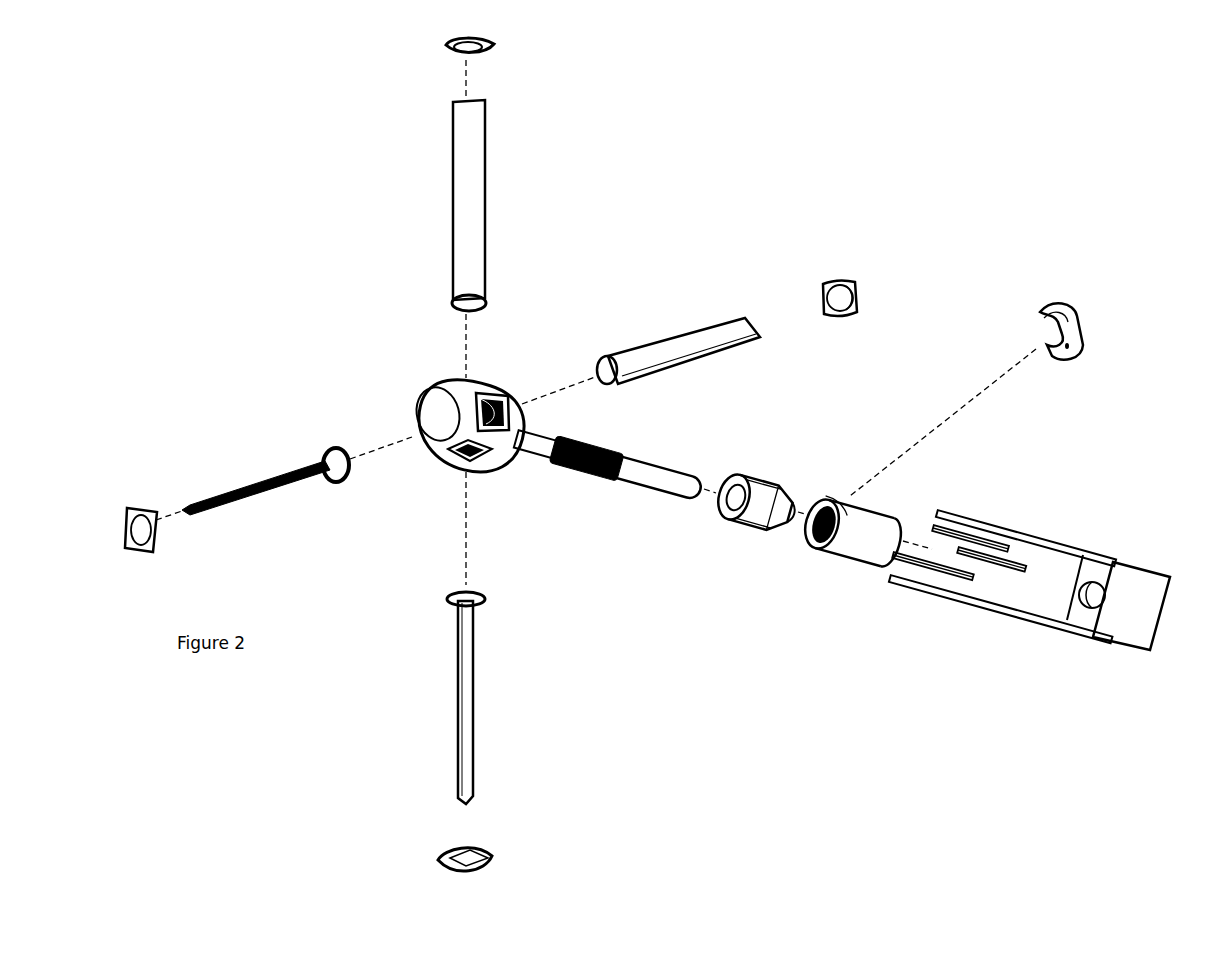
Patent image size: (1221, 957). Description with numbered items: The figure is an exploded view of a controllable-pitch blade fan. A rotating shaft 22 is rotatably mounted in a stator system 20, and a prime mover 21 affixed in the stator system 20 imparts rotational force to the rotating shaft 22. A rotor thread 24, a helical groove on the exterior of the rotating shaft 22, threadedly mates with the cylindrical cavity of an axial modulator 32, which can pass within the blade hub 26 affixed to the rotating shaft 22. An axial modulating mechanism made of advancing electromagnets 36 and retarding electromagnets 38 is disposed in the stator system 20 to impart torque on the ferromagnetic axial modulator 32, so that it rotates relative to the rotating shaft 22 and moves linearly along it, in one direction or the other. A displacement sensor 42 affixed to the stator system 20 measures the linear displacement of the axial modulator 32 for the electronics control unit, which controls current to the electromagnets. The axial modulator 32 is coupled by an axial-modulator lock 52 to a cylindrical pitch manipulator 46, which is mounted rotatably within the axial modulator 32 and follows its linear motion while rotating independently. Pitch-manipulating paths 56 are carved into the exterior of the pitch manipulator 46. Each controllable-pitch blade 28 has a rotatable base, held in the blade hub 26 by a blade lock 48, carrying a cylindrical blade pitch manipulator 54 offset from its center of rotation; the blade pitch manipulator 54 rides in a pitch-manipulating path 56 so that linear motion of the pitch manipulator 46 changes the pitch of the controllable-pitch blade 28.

The stator system 20 is at (1126, 560).
The prime mover 21 is at (1097, 610).
The rotating shaft 22 is at (660, 454).
The rotor thread 24 is at (594, 482).
The blade hub 26 is at (414, 404).
The controllable-pitch blade 28 is at (458, 698).
The axial modulator 32 is at (818, 548).
The advancing electromagnet 36 is at (992, 572).
The retarding electromagnet 38 is at (977, 533).
The displacement sensor 42 is at (934, 584).
The pitch manipulator 46 is at (735, 527).
The blade lock 48 is at (440, 858).
The axial-modulator lock 52 is at (1056, 300).
The blade pitch manipulator 54 is at (484, 312).
The pitch-manipulating path 56 is at (777, 481).